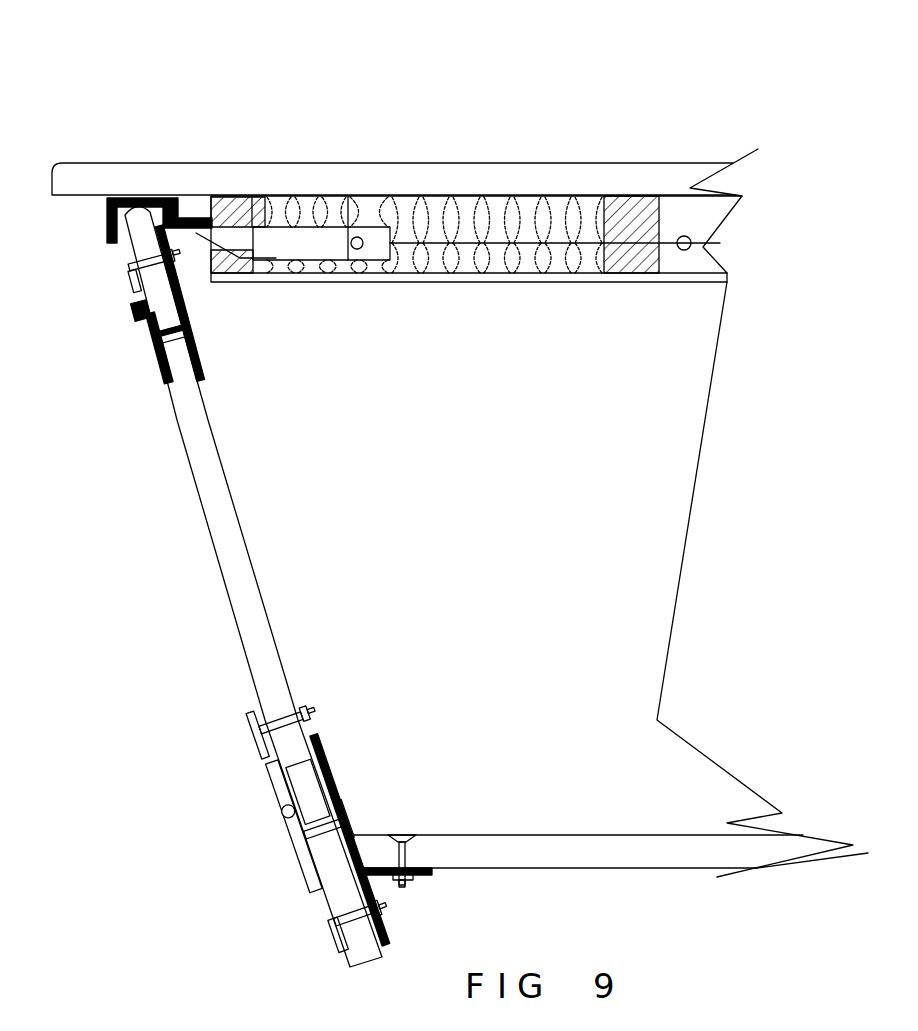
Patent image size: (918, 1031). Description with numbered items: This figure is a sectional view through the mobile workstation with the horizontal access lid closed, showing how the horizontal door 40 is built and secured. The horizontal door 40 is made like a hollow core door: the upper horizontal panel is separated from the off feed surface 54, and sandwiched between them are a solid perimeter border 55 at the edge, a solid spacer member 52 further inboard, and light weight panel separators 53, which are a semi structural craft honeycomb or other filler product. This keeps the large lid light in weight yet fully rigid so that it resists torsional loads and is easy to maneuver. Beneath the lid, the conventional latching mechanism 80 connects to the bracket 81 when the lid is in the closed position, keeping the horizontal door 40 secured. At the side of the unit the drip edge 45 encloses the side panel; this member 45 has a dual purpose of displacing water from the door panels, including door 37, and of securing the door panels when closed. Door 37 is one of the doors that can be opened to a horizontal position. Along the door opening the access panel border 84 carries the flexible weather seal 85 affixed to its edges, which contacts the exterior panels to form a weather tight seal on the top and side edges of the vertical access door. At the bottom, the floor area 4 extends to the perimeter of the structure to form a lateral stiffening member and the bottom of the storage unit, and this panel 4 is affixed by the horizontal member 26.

The floor area 4 is at (650, 843).
The horizontal member 26 is at (440, 876).
The door 37 is at (227, 537).
The horizontal door 40 is at (63, 176).
The drip edge 45 is at (100, 228).
The solid spacer member 52 is at (640, 197).
The light weight panel separator 53 is at (525, 230).
The off feed surface 54 is at (490, 279).
The solid perimeter border 55 is at (243, 207).
The latching mechanism 80 is at (312, 248).
The bracket 81 is at (192, 312).
The access panel border 84 is at (165, 392).
The flexible weather seal 85 is at (140, 305).